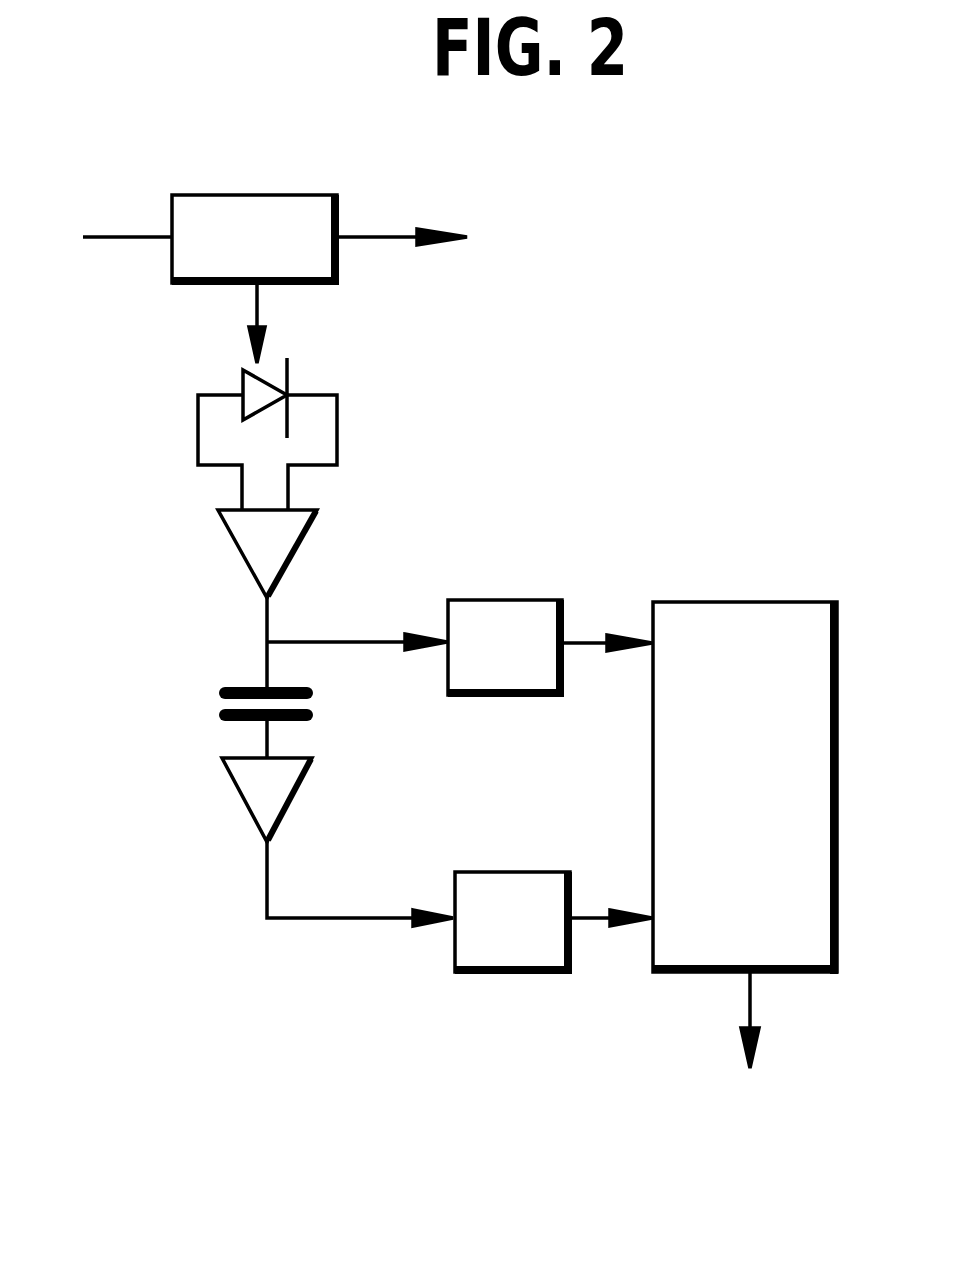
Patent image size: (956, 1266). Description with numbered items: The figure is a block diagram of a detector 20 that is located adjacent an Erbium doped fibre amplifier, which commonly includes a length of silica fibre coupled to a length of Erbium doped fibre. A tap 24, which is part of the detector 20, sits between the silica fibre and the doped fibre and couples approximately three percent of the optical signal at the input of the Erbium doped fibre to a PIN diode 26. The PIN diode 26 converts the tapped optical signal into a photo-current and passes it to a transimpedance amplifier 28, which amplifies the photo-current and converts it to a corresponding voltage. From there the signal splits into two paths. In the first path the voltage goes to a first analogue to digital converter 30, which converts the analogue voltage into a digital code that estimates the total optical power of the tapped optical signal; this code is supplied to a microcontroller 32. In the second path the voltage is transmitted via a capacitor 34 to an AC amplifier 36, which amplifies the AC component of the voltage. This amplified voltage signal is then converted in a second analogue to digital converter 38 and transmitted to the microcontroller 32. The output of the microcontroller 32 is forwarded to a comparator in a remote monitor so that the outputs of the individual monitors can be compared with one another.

The detector 20 is at (230, 1020).
The tap 24 is at (318, 252).
The PIN diode 26 is at (305, 380).
The transimpedance amplifier 28 is at (258, 538).
The first analogue to digital converter 30 is at (525, 695).
The microcontroller 32 is at (778, 955).
The capacitor 34 is at (317, 705).
The AC amplifier 36 is at (265, 797).
The second analogue to digital converter 38 is at (543, 957).